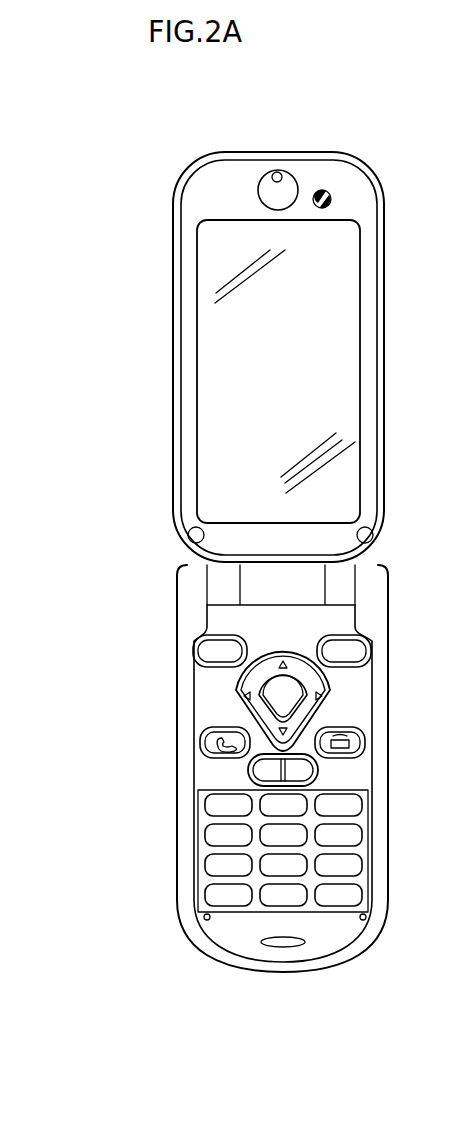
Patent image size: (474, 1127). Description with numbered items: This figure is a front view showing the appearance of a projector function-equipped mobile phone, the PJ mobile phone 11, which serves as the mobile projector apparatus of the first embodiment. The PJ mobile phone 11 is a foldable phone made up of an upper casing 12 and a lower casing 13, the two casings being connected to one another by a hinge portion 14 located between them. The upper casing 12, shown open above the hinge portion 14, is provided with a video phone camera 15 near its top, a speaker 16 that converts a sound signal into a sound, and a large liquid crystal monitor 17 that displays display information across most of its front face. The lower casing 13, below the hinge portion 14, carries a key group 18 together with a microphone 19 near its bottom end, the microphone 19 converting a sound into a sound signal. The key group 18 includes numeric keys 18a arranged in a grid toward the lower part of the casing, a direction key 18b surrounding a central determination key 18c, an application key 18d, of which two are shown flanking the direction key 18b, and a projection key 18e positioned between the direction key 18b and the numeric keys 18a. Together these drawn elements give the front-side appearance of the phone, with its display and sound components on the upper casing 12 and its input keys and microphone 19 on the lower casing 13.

The PJ mobile phone 11 is at (153, 233).
The upper casing 12 is at (197, 327).
The lower casing 13 is at (190, 614).
The hinge portion 14 is at (232, 580).
The video phone camera 15 is at (327, 192).
The speaker 16 is at (287, 170).
The liquid crystal monitor 17 is at (343, 280).
The key group 18 is at (66, 655).
The numeric keys 18a is at (165, 787).
The direction key 18b is at (248, 696).
The determination key 18c is at (275, 702).
The application key 18d is at (205, 657).
The projection key 18e is at (255, 770).
The microphone 19 is at (283, 945).